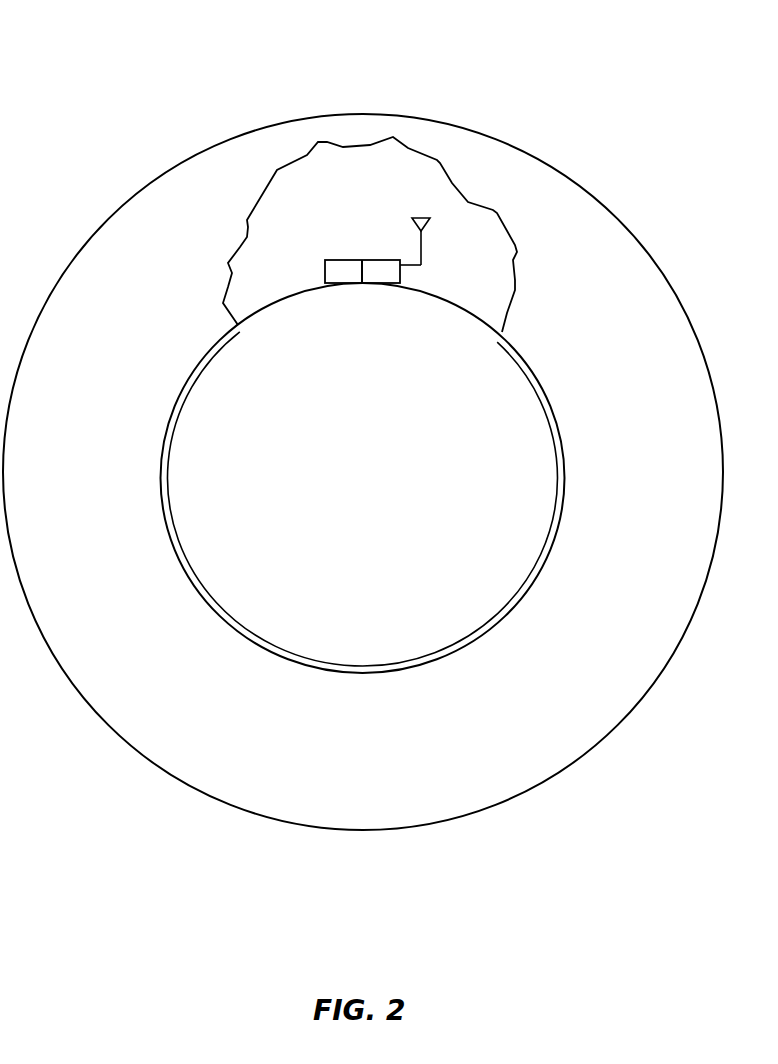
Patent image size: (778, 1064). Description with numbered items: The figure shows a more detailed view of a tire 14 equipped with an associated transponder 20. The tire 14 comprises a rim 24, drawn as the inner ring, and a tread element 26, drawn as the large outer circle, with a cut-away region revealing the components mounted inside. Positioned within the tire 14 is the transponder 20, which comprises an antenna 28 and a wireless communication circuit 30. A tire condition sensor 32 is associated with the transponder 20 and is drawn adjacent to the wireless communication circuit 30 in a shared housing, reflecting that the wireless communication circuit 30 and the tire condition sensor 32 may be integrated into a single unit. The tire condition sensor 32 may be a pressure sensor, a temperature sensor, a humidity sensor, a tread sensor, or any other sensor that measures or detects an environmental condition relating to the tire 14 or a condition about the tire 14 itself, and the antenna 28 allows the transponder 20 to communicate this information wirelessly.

The tire 14 is at (363, 422).
The transponder 20 is at (340, 222).
The rim 24 is at (548, 397).
The tread element 26 is at (610, 728).
The antenna 28 is at (428, 227).
The wireless communication circuit 30 is at (370, 262).
The tire condition sensor 32 is at (345, 263).